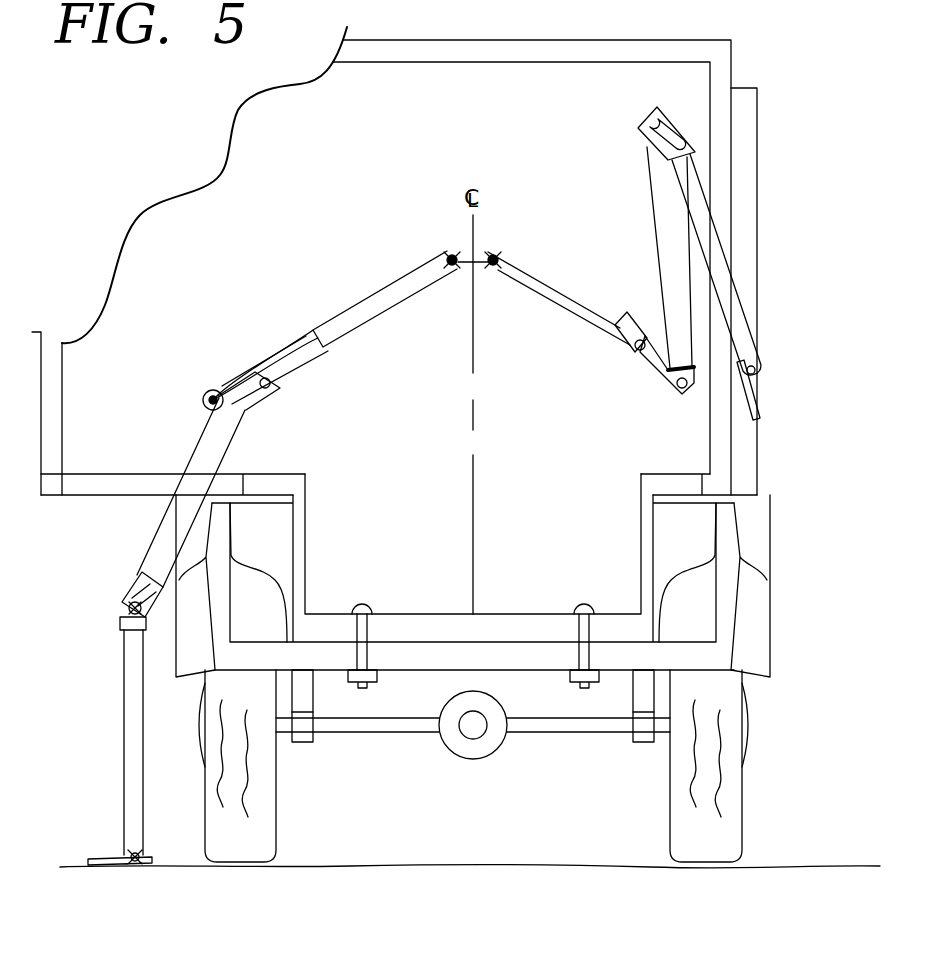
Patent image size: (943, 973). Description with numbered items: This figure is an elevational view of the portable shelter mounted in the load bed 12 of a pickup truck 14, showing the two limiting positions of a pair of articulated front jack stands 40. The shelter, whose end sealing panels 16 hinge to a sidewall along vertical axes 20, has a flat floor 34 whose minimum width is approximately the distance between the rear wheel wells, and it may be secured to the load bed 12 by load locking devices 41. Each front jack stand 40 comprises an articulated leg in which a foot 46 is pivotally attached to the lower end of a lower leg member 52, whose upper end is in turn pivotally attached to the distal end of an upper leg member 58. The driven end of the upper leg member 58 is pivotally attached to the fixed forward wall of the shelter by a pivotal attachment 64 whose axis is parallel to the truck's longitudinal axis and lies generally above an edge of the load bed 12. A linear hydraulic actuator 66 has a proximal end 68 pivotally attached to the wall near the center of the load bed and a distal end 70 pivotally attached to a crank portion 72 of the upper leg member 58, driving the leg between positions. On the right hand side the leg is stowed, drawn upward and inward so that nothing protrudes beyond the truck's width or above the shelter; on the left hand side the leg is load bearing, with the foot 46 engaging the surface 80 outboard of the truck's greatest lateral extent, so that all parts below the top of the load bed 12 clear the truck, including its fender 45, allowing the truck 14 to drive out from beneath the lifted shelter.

The load bed 12 is at (702, 535).
The pickup truck 14 is at (588, 773).
The end sealing panels 16 is at (152, 413).
The vertical axes 20 is at (733, 108).
The flat floor 34 is at (557, 617).
The front jack stand 40 is at (105, 658).
The load locking devices 41 is at (363, 607).
The fender 45 is at (180, 643).
The foot 46 is at (757, 388).
The lower leg member 52 is at (720, 267).
The upper leg member 58 is at (663, 200).
The pivotal attachment 64 is at (270, 387).
The linear hydraulic actuator 66 is at (530, 285).
The proximal end 68 is at (452, 250).
The distal end 70 is at (260, 372).
The crank portion 72 is at (657, 393).
The surface on which the truck is parked 80 is at (480, 946).